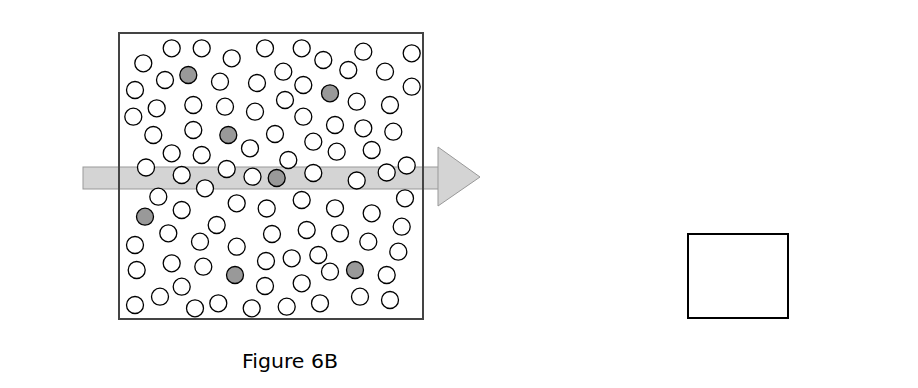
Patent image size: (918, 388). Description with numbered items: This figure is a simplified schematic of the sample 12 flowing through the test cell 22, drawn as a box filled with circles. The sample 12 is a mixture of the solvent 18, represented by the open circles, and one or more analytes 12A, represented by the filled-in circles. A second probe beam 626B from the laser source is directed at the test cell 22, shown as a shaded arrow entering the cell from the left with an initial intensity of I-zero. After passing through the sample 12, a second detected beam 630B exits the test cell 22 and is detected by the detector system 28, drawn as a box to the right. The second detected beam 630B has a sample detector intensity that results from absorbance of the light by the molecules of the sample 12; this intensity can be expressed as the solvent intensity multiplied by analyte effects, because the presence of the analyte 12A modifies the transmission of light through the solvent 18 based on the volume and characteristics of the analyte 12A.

The test cell 22 is at (114, 50).
The solvent 18 is at (413, 53).
The analyte 12A is at (330, 93).
The sample 12 is at (340, 173).
The second probe beam 626B is at (82, 188).
The second detected beam 630B is at (480, 178).
The detector system 28 is at (738, 276).